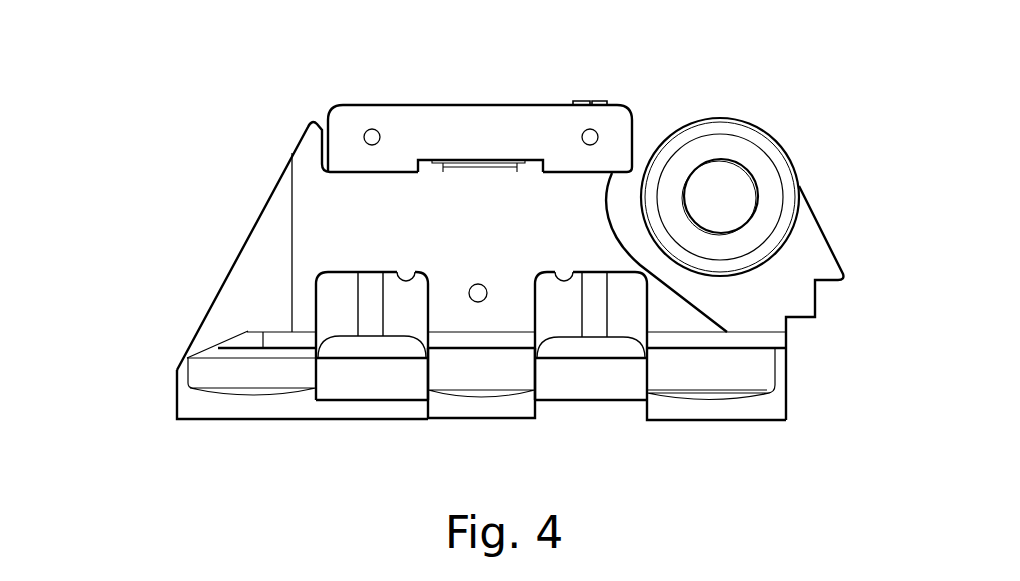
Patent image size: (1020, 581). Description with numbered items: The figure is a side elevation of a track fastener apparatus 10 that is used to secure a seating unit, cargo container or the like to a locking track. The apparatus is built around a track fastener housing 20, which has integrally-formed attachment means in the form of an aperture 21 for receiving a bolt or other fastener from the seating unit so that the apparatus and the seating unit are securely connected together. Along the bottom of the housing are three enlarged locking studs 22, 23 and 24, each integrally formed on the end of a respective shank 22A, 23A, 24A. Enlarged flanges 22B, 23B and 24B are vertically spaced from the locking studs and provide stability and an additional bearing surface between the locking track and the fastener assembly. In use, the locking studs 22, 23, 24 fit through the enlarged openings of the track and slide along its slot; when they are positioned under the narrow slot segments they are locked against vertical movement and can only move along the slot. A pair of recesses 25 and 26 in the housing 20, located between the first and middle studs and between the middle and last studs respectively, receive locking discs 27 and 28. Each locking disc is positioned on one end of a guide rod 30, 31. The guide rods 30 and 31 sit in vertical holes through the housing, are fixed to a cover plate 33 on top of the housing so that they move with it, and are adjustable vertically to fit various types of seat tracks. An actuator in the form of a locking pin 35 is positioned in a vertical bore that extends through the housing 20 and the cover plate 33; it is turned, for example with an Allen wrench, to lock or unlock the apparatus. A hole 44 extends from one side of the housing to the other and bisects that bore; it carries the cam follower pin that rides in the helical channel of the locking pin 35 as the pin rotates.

The track fastener apparatus 10 is at (124, 147).
The track fastener housing 20 is at (308, 197).
The aperture 21 is at (745, 178).
The locking stud 22 is at (185, 412).
The shank 22A is at (212, 373).
The flange 22B is at (287, 333).
The locking stud 23 is at (440, 412).
The shank 23A is at (488, 375).
The flange 23B is at (480, 340).
The locking stud 24 is at (713, 410).
The shank 24A is at (763, 367).
The flange 24B is at (777, 340).
The recess 25 is at (405, 276).
The recess 26 is at (562, 283).
The locking disc 27 is at (355, 392).
The locking disc 28 is at (613, 387).
The guide rod 30 is at (343, 312).
The guide rod 31 is at (597, 313).
The cover plate 33 is at (487, 112).
The locking pin 35 is at (470, 165).
The hole 44 is at (478, 302).